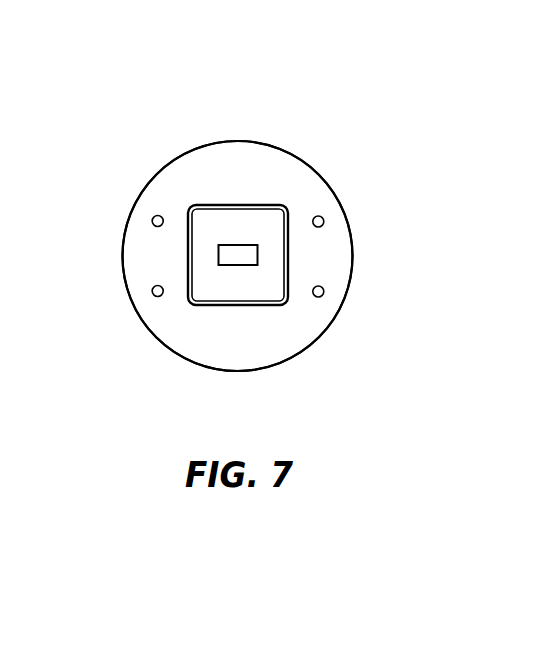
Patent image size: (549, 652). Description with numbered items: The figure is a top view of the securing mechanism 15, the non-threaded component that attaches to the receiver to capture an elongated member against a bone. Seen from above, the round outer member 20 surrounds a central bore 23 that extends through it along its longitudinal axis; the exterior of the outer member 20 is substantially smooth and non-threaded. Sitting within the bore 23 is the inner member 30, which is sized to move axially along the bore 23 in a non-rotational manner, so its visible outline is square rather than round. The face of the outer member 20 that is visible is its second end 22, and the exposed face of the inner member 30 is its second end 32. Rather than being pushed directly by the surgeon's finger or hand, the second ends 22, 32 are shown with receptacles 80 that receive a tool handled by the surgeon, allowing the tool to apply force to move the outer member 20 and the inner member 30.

The securing mechanism 15 is at (160, 97).
The outer member 20 is at (208, 342).
The second end 22 is at (258, 168).
The bore 23 is at (254, 203).
The inner member 30 is at (207, 230).
The second end 32 is at (242, 288).
The receptacles 80 is at (325, 291).